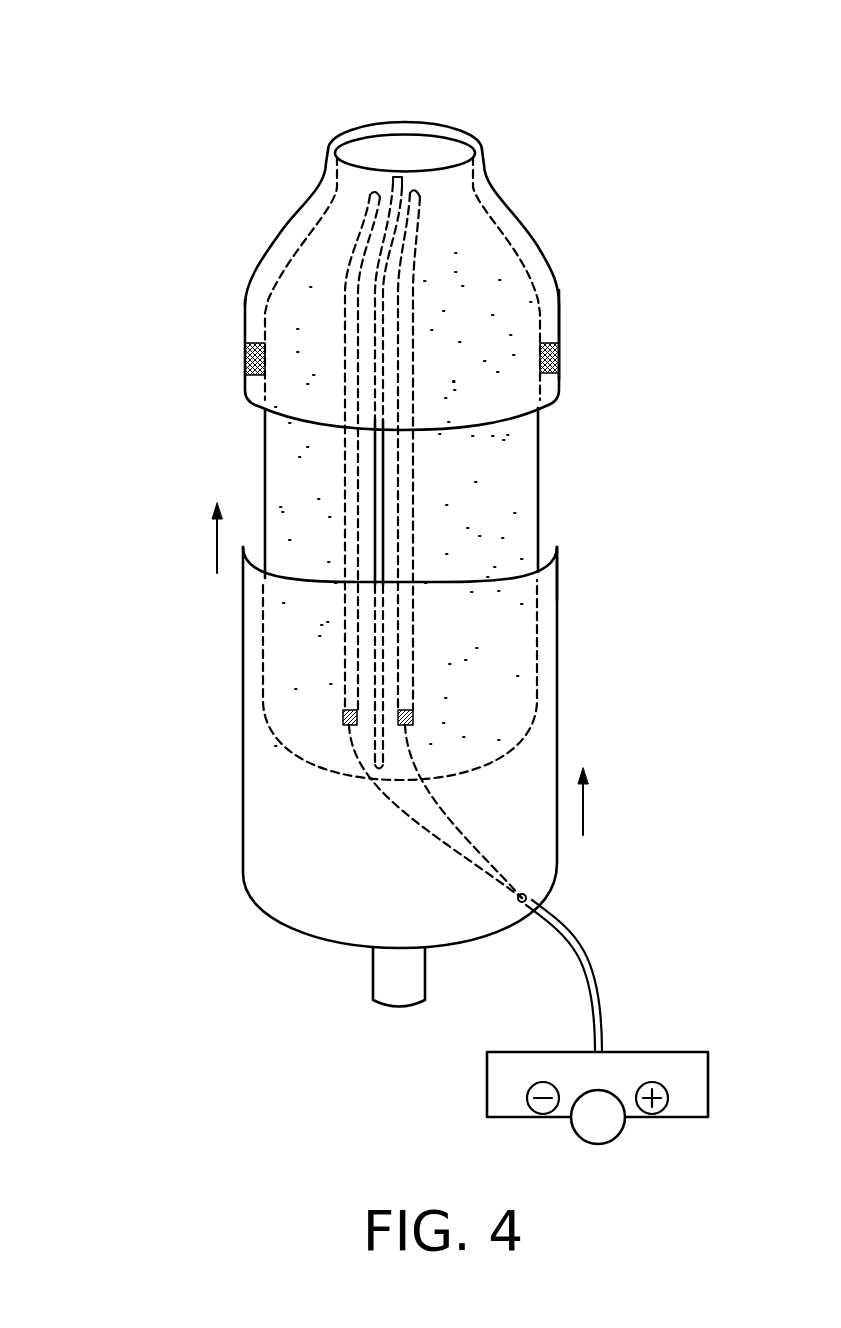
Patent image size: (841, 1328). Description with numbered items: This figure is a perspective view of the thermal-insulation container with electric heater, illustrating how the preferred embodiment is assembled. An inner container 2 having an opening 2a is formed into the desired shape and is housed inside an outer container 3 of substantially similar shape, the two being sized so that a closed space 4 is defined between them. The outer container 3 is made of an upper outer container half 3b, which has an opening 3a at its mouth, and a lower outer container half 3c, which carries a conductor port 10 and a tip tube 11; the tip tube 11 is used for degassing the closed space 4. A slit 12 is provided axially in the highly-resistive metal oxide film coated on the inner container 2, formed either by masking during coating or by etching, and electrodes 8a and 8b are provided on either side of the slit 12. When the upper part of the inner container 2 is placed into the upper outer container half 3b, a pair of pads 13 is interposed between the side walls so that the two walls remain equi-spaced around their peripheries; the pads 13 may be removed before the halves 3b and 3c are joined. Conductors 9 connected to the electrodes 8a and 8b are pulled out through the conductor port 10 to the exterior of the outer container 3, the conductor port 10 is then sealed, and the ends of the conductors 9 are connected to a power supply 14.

The inner container 2 is at (537, 268).
The opening 2a is at (387, 137).
The outer container 3 is at (297, 483).
The opening 3a is at (402, 161).
The upper outer container half 3b is at (242, 323).
The lower outer container half 3c is at (327, 725).
The closed space 4 is at (550, 317).
The electrode 8a is at (330, 212).
The electrode 8b is at (420, 210).
The conductor 9 is at (594, 1017).
The conductor port 10 is at (529, 898).
The tip tube 11 is at (402, 977).
The slit 12 is at (412, 182).
The pad 13 is at (245, 335).
The power supply 14 is at (623, 1130).